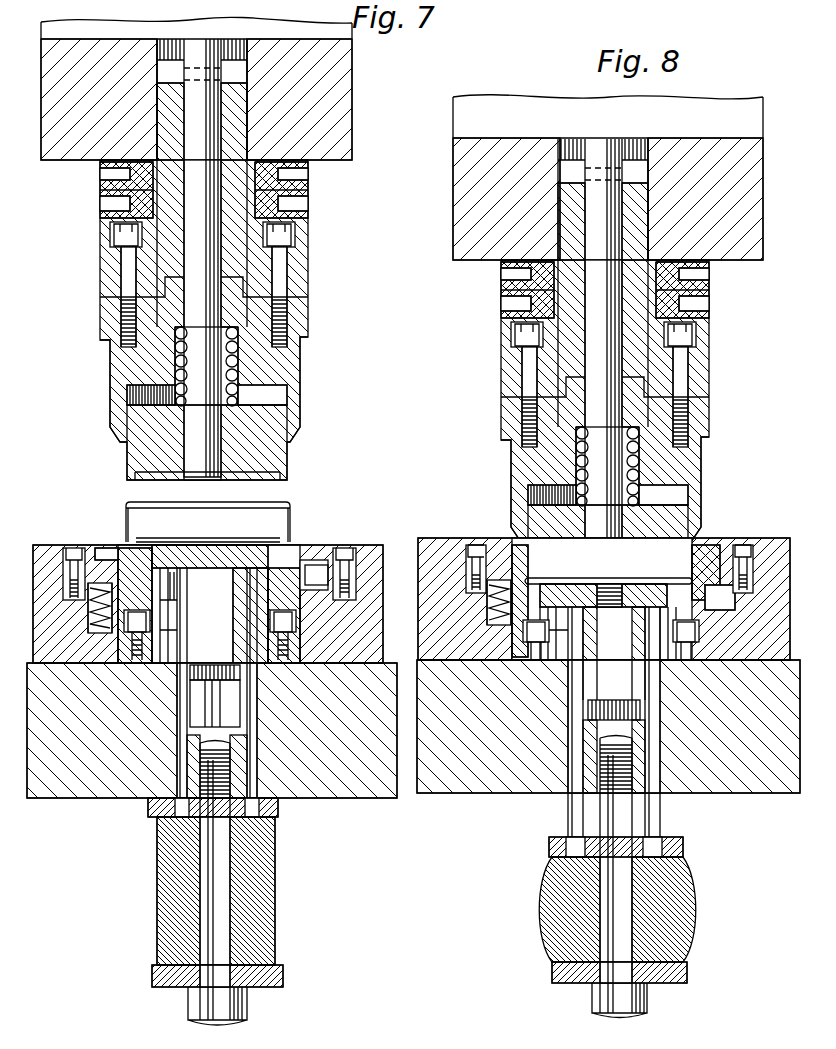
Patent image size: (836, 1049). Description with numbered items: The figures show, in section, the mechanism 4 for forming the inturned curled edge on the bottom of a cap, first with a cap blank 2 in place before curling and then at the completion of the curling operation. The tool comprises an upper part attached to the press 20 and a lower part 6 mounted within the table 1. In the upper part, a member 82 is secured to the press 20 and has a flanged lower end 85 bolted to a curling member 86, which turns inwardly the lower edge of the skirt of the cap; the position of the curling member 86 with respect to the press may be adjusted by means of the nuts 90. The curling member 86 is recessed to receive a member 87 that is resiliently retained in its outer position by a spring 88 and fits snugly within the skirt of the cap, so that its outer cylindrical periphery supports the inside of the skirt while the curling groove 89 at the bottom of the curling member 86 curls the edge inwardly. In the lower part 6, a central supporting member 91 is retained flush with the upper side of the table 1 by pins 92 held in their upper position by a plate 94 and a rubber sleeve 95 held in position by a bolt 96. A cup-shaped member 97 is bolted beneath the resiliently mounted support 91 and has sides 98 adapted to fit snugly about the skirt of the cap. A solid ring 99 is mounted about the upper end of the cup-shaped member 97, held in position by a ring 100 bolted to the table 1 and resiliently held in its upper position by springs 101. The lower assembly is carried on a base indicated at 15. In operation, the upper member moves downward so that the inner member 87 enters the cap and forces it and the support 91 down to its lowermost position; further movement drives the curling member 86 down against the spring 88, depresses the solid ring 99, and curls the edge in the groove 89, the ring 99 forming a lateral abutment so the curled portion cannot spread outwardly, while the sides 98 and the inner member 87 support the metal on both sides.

In FIG. 7, the table 1 is at (368, 561).
In FIG. 8, the table 1 is at (418, 548).
In FIG. 7, the cap blank 2 is at (292, 500).
In FIG. 7, the curling mechanism 4 is at (317, 261).
In FIG. 8, the curling mechanism 4 is at (478, 325).
In FIG. 7, the lower part of the tool 6 is at (360, 520).
In FIG. 8, the lower part of the tool 6 is at (476, 516).
In FIG. 7, the bolster plate 15 is at (61, 805).
In FIG. 8, the bolster plate 15 is at (496, 799).
In FIG. 7, the press 20 is at (352, 68).
In FIG. 8, the press 20 is at (755, 238).
In FIG. 7, the member 82 is at (232, 123).
In FIG. 8, the member 82 is at (665, 283).
In FIG. 7, the flanged lower end 85 is at (174, 320).
In FIG. 8, the flanged lower end 85 is at (637, 420).
In FIG. 7, the curling member 86 is at (295, 360).
In FIG. 8, the curling member 86 is at (589, 489).
In FIG. 7, the inner supporting member 87 is at (268, 420).
In FIG. 8, the inner supporting member 87 is at (643, 521).
In FIG. 7, the spring 88 is at (173, 395).
In FIG. 8, the spring 88 is at (639, 471).
In FIG. 7, the curling groove 89 is at (290, 449).
In FIG. 8, the curling groove 89 is at (644, 532).
In FIG. 7, the nuts 90 is at (100, 188).
In FIG. 8, the nuts 90 is at (637, 303).
In FIG. 7, the central supporting member 91 is at (240, 548).
In FIG. 8, the central supporting member 91 is at (738, 539).
In FIG. 7, the pins 92 is at (175, 755).
In FIG. 8, the pins 92 is at (568, 815).
In FIG. 7, the plate 94 is at (148, 815).
In FIG. 8, the plate 94 is at (685, 845).
In FIG. 7, the rubber sleeve 95 is at (158, 909).
In FIG. 8, the rubber sleeve 95 is at (690, 880).
In FIG. 7, the bolt 96 is at (212, 970).
In FIG. 8, the bolt 96 is at (620, 960).
In FIG. 7, the cup-shaped member 97 is at (243, 605).
In FIG. 8, the cup-shaped member 97 is at (520, 618).
In FIG. 7, the sides of the cup-shaped member 98 is at (305, 548).
In FIG. 7, the solid ring 99 is at (105, 548).
In FIG. 8, the solid ring 99 is at (704, 548).
In FIG. 7, the ring 100 is at (85, 545).
In FIG. 8, the ring 100 is at (492, 545).
In FIG. 7, the springs 101 is at (88, 598).
In FIG. 8, the springs 101 is at (488, 602).